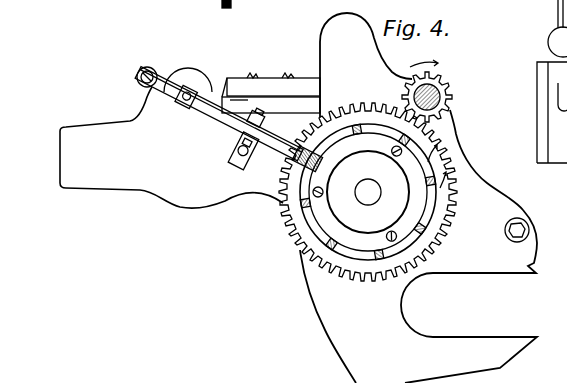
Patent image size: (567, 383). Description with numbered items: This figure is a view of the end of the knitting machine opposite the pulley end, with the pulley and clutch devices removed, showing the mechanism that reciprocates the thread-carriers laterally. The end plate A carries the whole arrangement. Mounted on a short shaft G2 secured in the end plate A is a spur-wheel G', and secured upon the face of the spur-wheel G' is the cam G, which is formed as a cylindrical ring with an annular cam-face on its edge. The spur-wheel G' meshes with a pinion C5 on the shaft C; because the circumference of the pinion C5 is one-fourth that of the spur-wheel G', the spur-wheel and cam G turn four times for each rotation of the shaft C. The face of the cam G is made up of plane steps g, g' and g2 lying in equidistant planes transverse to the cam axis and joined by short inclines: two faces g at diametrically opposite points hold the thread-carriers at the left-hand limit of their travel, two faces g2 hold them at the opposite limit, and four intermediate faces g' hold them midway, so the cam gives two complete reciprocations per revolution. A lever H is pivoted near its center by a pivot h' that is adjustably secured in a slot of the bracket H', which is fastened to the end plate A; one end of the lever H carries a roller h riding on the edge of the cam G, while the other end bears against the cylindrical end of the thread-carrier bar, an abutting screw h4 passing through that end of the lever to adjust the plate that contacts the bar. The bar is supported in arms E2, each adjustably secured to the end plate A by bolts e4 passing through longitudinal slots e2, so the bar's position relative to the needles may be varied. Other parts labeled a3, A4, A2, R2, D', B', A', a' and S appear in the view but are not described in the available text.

The end plate A is at (418, 246).
The frame hump a3 is at (366, 65).
The left plate A4 is at (171, 147).
The frame bolt A2 is at (521, 228).
The right bracket R2 is at (548, 26).
The upper bar D' is at (273, 84).
The bar end B' is at (235, 80).
The lower bar A' is at (271, 106).
The bar slot a' is at (244, 106).
The abutting screw h4 is at (152, 66).
The arm E2 is at (168, 76).
The lever H is at (219, 114).
The roller h is at (291, 167).
The bolt e4 is at (195, 83).
The longitudinal slot e2 is at (205, 93).
The pivot h' is at (270, 119).
The bracket H' is at (233, 151).
The cam face g is at (368, 182).
The cam G is at (357, 199).
The spur-wheel G' is at (390, 192).
The cam face g2 is at (332, 237).
The intermediate cam face g' is at (371, 192).
The screws S is at (360, 206).
The short shaft G2 is at (368, 192).
The shaft C is at (444, 79).
The pinion C5 is at (447, 97).